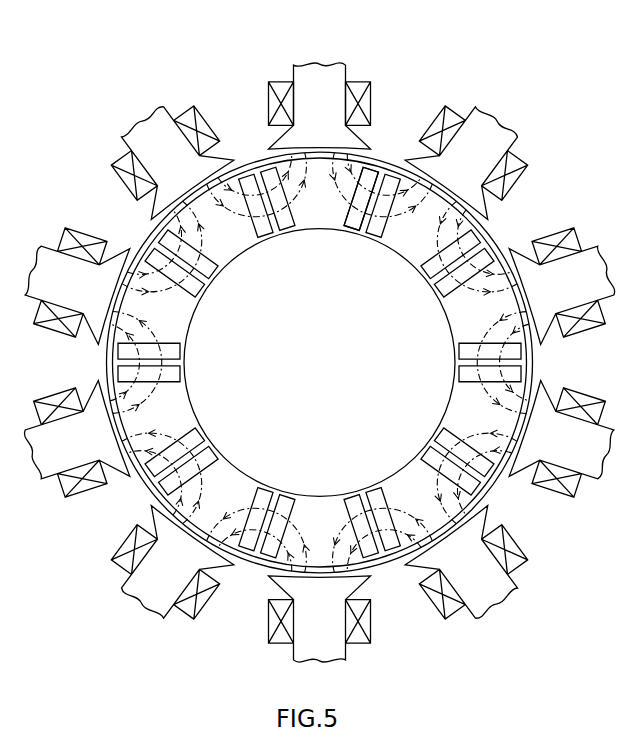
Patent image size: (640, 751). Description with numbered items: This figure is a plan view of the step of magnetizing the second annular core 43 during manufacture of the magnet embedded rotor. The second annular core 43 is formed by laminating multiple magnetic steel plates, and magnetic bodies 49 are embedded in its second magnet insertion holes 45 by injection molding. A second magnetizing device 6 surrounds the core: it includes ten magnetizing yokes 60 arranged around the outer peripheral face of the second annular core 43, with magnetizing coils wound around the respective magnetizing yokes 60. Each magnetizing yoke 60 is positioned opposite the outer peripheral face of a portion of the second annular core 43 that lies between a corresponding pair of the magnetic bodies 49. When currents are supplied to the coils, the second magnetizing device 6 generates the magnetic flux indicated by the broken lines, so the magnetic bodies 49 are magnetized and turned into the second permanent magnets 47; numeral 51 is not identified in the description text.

The second magnetizing device 6 is at (531, 69).
The second annular core 43 is at (489, 239).
The second magnet insertion holes 45 is at (288, 237).
The second permanent magnets 47 is at (403, 154).
The magnetic bodies 49 is at (347, 174).
The coil 51 is at (360, 83).
The magnetizing yokes 60 is at (310, 63).